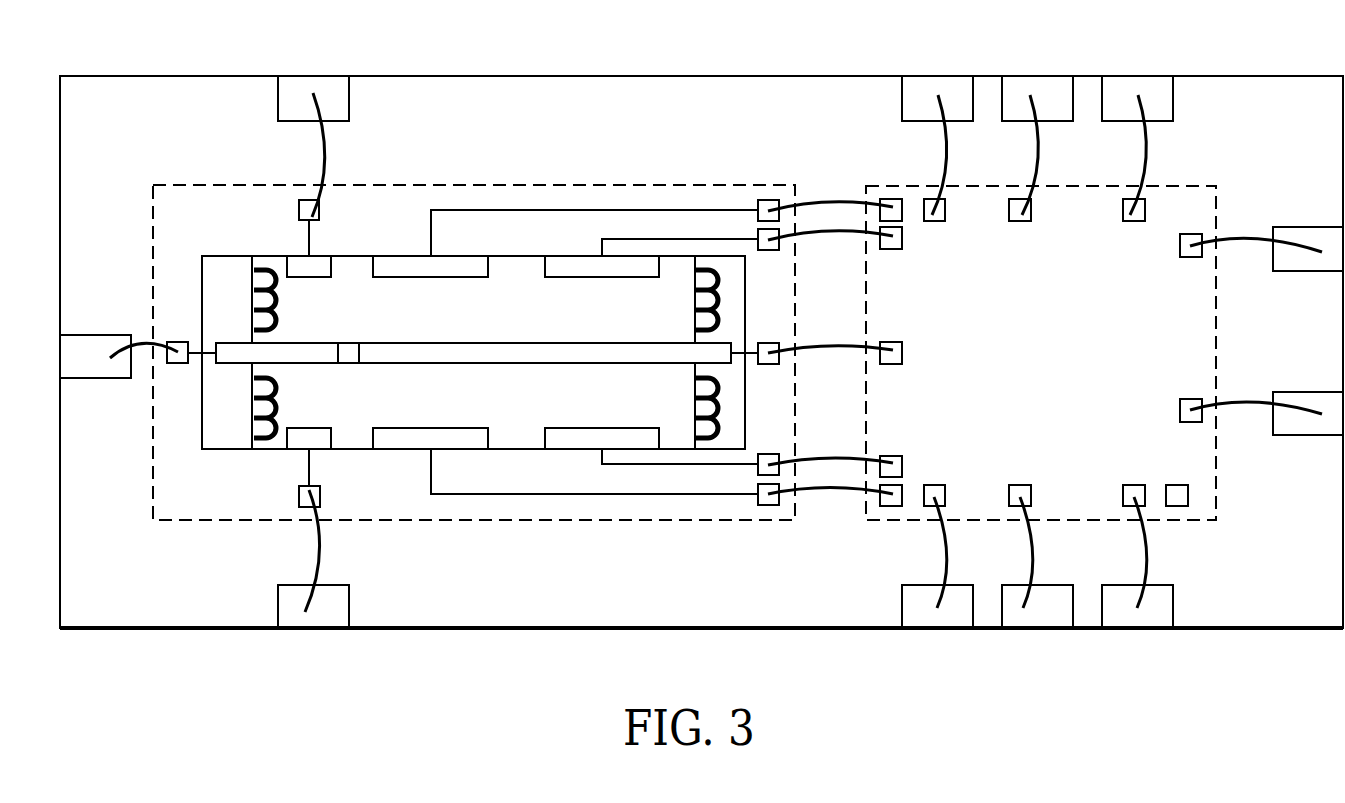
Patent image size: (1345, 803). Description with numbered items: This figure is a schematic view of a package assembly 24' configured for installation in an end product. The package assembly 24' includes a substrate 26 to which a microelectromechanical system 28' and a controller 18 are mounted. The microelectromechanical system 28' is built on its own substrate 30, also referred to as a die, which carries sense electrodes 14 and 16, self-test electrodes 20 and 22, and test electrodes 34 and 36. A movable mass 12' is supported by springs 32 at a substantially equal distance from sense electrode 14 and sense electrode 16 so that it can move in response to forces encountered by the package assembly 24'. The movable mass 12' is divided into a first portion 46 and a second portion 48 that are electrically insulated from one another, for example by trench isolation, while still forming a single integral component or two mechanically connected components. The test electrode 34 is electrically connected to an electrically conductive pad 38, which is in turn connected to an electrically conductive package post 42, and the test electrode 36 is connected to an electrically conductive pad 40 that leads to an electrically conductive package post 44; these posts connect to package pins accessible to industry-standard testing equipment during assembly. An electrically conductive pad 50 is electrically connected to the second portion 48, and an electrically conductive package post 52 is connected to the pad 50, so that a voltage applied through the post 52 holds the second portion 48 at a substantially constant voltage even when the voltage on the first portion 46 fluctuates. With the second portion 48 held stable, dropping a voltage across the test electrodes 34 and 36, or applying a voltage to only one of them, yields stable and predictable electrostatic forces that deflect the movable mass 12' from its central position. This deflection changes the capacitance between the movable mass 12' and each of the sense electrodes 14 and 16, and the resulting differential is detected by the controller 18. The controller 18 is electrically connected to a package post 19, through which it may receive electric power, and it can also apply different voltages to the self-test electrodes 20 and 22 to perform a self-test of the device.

The package assembly 24' is at (701, 340).
The substrate 26 is at (183, 77).
The electrically conductive package post 42 is at (298, 77).
The package post 19 is at (920, 77).
The electrically conductive package post 44 is at (298, 630).
The electrically conductive package post 52 is at (98, 378).
The microelectromechanical system 28' is at (474, 340).
The substrate 30 is at (495, 522).
The electrically conductive pad 38 is at (320, 212).
The electrically conductive pad 40 is at (322, 498).
The electrically conductive pad 50 is at (178, 365).
The movable mass 12' is at (473, 352).
The test electrode 34 is at (309, 280).
The test electrode 36 is at (320, 427).
The self-test electrode 22 is at (412, 280).
The self-test electrode 20 is at (452, 427).
The sense electrode 16 is at (586, 280).
The sense electrode 14 is at (605, 427).
The second portion 48 is at (308, 368).
The first portion 46 is at (534, 363).
The springs 32 is at (252, 298).
The controller 18 is at (1216, 336).